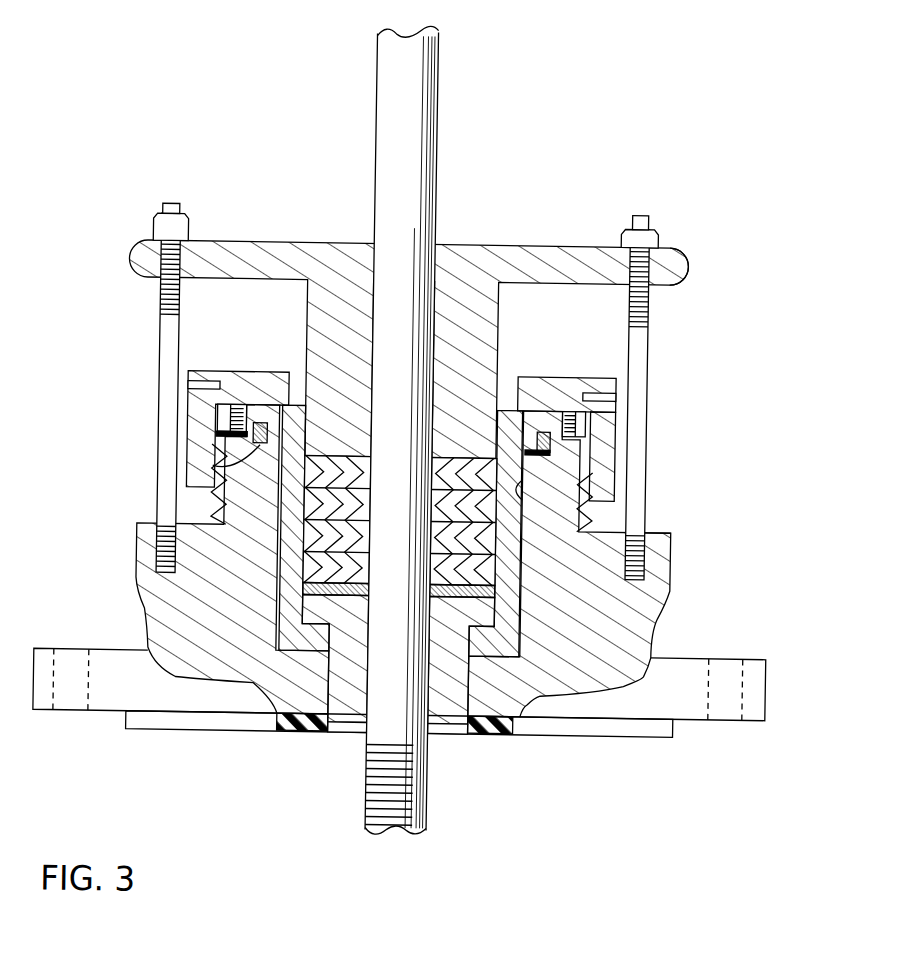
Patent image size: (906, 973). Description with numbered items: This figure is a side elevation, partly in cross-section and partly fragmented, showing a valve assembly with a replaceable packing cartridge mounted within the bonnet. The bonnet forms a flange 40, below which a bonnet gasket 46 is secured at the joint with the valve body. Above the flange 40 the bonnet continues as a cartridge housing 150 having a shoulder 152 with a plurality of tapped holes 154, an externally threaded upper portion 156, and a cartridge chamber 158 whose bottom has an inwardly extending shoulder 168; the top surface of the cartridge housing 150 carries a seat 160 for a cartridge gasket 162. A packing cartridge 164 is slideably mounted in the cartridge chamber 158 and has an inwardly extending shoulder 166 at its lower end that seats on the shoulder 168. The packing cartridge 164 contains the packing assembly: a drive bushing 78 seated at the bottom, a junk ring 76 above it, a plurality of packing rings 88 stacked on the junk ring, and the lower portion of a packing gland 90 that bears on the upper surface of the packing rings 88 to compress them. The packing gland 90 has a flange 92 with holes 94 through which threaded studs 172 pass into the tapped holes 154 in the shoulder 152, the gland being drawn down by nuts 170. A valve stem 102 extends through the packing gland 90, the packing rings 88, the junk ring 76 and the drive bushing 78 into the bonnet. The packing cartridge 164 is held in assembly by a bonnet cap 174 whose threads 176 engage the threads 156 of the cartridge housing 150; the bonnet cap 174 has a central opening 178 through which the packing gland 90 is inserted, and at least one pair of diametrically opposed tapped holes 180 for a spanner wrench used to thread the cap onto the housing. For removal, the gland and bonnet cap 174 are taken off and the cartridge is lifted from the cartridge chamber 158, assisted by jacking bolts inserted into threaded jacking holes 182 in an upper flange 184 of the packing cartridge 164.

The flange 40 is at (771, 684).
The bonnet gasket 46 is at (676, 726).
The shoulder 76 is at (280, 602).
The drive bushing 78 is at (347, 711).
The packing rings 88 is at (313, 504).
The packing gland 90 is at (477, 244).
The flange 92 is at (685, 260).
The holes 94 is at (653, 246).
The valve stem 102 is at (420, 127).
The cartridge housing 150 is at (674, 574).
The shoulder 152 is at (654, 526).
The tapped holes 154 is at (648, 523).
The externally threaded upper portion 156 is at (598, 512).
The cartridge chamber 158 is at (523, 478).
The seat 160 is at (220, 441).
The cartridge gasket 162 is at (213, 468).
The packing cartridge 164 is at (530, 458).
The shoulder 166 is at (463, 642).
The shoulder 168 is at (537, 705).
The nuts 170 is at (186, 231).
The threaded studs 172 is at (168, 209).
The bonnet cap 174 is at (571, 377).
The threads 176 is at (578, 490).
The central opening 178 is at (506, 383).
The tapped holes 180 is at (197, 386).
The threaded jacking holes 182 is at (236, 407).
The upper flange 184 is at (227, 435).